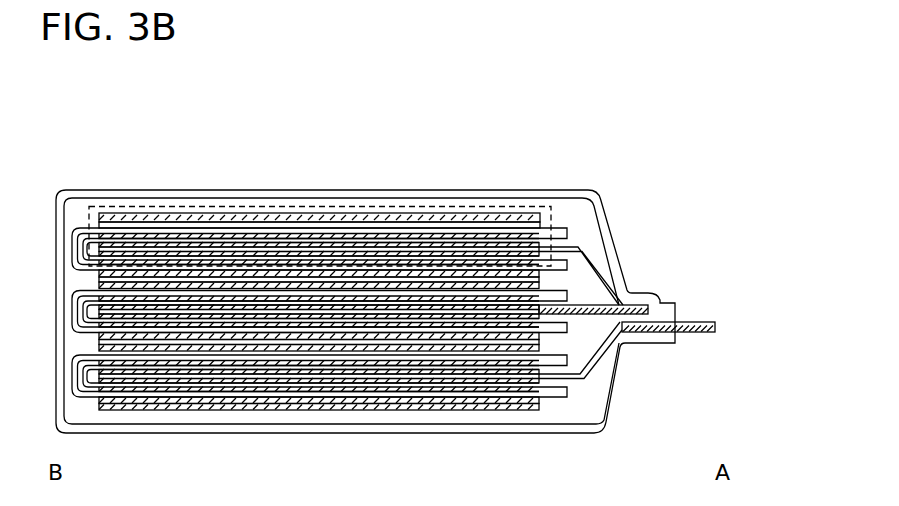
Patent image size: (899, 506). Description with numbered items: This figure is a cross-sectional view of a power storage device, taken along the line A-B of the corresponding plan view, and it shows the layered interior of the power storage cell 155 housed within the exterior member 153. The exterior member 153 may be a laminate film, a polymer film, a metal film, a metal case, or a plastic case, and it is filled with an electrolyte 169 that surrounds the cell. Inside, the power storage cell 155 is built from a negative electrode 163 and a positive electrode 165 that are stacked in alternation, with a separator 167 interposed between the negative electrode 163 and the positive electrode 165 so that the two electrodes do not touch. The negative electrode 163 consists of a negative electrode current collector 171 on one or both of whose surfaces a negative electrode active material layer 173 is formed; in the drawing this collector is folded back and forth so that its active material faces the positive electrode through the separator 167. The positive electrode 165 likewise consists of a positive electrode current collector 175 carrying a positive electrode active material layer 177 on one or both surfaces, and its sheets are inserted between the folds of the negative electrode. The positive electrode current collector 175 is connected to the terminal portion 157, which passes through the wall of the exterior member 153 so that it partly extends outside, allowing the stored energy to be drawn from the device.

The exterior member 153 is at (616, 243).
The power storage cell 155 is at (120, 207).
The terminal portion 157 is at (716, 326).
The negative electrode 163 is at (257, 125).
The positive electrode 165 is at (513, 125).
The separator 167 is at (302, 240).
The electrolyte 169 is at (583, 227).
The negative electrode current collector 171 is at (194, 228).
The negative electrode active material layer 173 is at (247, 236).
The positive electrode current collector 175 is at (447, 251).
The positive electrode active material layer 177 is at (392, 247).